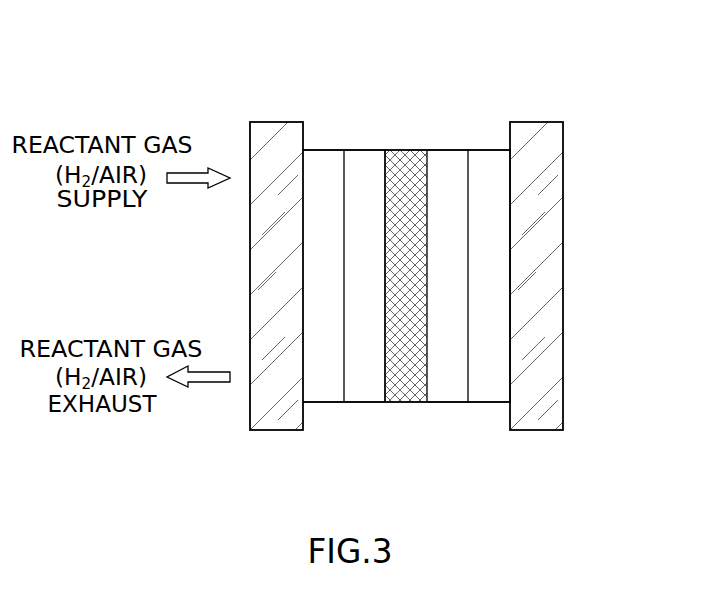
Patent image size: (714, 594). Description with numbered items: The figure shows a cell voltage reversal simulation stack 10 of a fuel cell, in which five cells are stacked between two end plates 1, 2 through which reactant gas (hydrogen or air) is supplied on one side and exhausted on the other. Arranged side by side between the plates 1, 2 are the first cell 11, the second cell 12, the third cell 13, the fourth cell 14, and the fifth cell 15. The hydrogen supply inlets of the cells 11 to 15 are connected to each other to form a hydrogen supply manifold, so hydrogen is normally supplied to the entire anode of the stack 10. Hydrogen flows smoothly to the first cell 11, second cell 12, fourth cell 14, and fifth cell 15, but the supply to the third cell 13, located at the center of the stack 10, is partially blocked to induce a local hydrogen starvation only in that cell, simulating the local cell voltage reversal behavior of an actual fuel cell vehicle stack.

The stack 10 is at (560, 102).
The end plate 1 is at (273, 418).
The end plate 2 is at (535, 418).
The first cell 11 is at (323, 162).
The second cell 12 is at (368, 160).
The third cell 13 is at (407, 160).
The fourth cell 14 is at (450, 160).
The fifth cell 15 is at (487, 157).